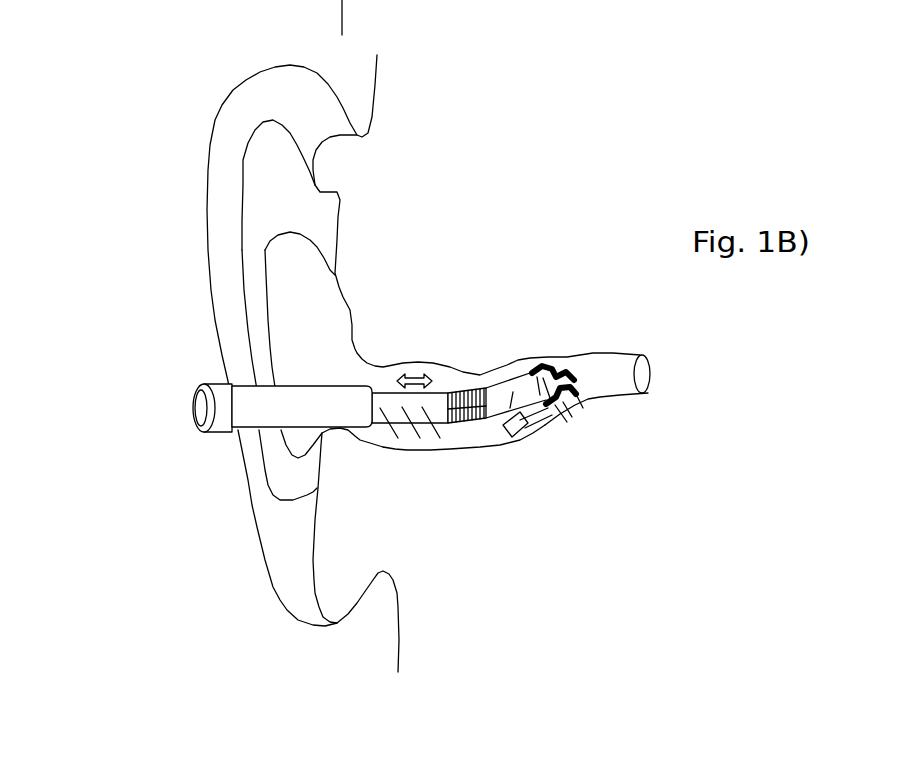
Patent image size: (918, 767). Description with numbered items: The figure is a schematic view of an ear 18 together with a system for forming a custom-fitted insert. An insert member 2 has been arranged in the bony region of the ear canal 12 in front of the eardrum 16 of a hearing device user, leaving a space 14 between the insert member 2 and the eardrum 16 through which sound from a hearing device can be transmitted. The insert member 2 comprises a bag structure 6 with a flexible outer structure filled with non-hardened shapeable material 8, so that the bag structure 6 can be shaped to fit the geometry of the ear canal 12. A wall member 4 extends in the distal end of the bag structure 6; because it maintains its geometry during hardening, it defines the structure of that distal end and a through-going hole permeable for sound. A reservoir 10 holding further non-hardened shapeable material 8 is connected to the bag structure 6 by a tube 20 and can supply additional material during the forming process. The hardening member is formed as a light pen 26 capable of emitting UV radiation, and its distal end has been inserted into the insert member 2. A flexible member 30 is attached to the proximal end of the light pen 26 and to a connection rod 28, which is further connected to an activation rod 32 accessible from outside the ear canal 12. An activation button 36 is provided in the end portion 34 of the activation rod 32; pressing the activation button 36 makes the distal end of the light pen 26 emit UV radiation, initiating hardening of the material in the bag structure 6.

The insert member 2 is at (502, 320).
The wall member 4 is at (585, 393).
The bag structure 6 is at (572, 375).
The non-hardened shapeable material 8 is at (565, 412).
The reservoir 10 is at (518, 433).
The ear canal 12 is at (452, 393).
The space 14 is at (614, 399).
The eardrum 16 is at (648, 375).
The ear 18 is at (232, 92).
The tube 20 is at (537, 430).
The hardening member 26 is at (500, 407).
The connection rod 28 is at (430, 425).
The flexible member 30 is at (480, 446).
The activation rod 32 is at (303, 405).
The end portion 34 is at (218, 433).
The activation button 36 is at (193, 410).